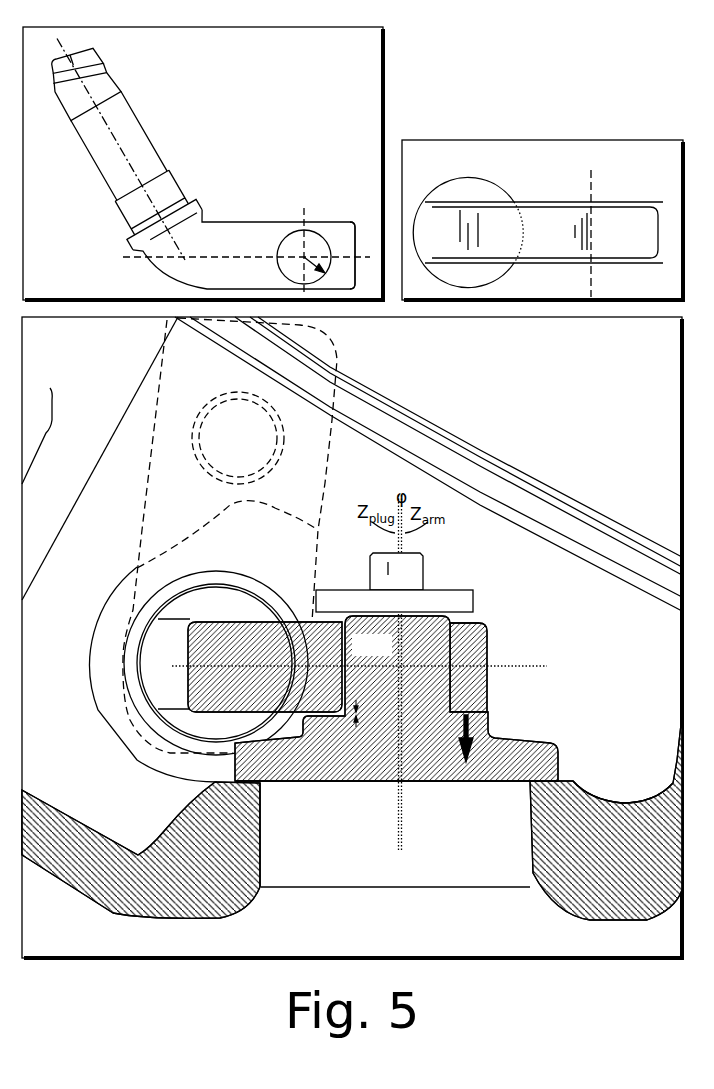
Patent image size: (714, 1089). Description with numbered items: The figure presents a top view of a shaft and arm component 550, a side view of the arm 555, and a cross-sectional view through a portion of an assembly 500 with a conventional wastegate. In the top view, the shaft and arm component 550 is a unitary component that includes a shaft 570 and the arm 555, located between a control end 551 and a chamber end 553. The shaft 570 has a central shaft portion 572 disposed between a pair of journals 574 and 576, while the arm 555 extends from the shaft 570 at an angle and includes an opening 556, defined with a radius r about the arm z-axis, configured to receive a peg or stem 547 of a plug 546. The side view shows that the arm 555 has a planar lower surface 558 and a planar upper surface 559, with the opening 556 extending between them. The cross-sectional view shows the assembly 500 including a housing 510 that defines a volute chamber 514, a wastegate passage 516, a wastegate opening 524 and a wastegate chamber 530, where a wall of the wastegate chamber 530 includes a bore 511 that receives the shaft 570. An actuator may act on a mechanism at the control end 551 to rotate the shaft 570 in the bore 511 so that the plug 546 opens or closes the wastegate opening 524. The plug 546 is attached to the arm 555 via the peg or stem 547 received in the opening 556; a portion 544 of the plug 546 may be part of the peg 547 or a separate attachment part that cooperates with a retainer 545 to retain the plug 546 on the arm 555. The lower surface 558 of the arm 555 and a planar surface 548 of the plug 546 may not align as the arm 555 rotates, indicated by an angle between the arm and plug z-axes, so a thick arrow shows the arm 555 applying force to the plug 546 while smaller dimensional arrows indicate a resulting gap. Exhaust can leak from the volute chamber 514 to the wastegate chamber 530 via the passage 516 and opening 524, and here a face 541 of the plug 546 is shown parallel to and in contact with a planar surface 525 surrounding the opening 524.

The assembly 500 is at (77, 355).
The housing 510 is at (610, 865).
The bore 511 is at (138, 655).
The volute chamber 514 is at (498, 935).
The wastegate passage 516 is at (262, 887).
The wastegate opening 524 is at (262, 783).
The planar surface 525 is at (558, 778).
The wastegate chamber 530 is at (637, 651).
The face 541 is at (422, 783).
The portion of the plug 544 is at (412, 562).
The retainer 545 is at (467, 596).
The plug 546 is at (558, 748).
The peg or stem 547 is at (387, 655).
The planar surface of the plug 548 is at (480, 714).
The shaft and arm component 550 is at (358, 65).
The control end 551 is at (75, 52).
The chamber end 553 is at (357, 222).
The arm 555 is at (248, 249).
The opening 556 is at (297, 232).
The lower surface 558 is at (600, 263).
The upper surface 559 is at (598, 202).
The shaft 570 is at (166, 118).
The central shaft portion 572 is at (135, 156).
The journal 574 is at (177, 187).
The journal 576 is at (112, 82).